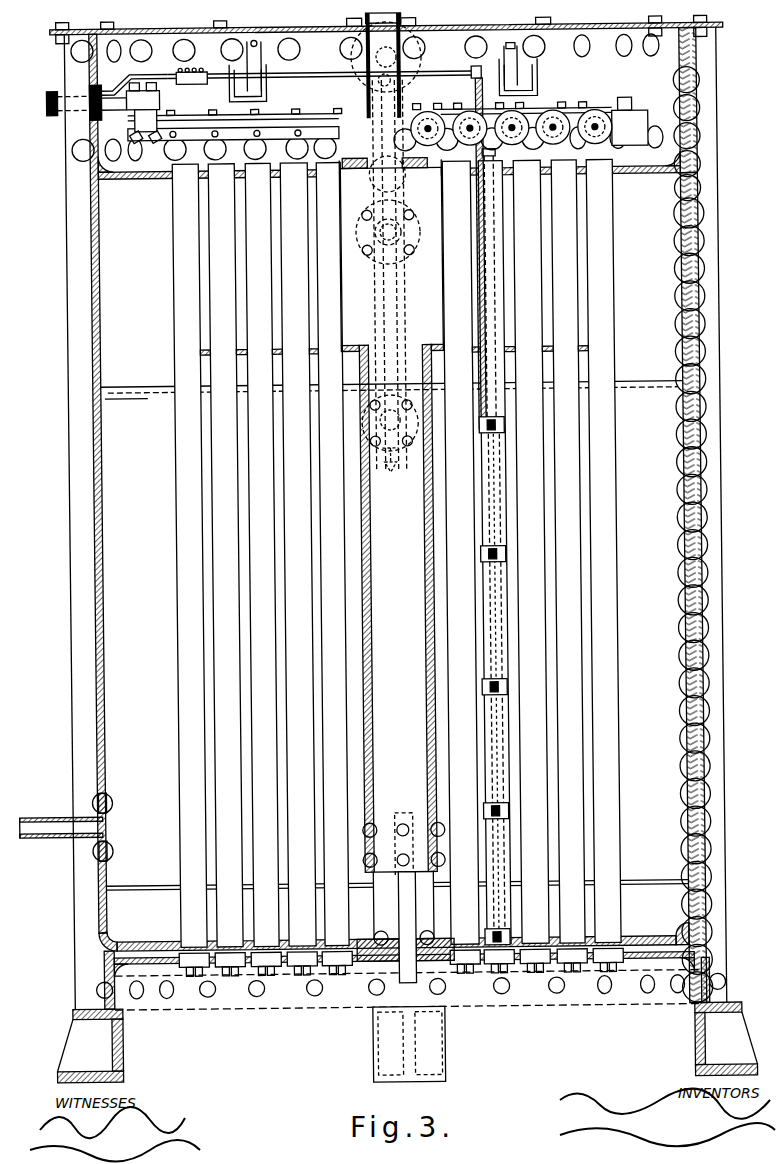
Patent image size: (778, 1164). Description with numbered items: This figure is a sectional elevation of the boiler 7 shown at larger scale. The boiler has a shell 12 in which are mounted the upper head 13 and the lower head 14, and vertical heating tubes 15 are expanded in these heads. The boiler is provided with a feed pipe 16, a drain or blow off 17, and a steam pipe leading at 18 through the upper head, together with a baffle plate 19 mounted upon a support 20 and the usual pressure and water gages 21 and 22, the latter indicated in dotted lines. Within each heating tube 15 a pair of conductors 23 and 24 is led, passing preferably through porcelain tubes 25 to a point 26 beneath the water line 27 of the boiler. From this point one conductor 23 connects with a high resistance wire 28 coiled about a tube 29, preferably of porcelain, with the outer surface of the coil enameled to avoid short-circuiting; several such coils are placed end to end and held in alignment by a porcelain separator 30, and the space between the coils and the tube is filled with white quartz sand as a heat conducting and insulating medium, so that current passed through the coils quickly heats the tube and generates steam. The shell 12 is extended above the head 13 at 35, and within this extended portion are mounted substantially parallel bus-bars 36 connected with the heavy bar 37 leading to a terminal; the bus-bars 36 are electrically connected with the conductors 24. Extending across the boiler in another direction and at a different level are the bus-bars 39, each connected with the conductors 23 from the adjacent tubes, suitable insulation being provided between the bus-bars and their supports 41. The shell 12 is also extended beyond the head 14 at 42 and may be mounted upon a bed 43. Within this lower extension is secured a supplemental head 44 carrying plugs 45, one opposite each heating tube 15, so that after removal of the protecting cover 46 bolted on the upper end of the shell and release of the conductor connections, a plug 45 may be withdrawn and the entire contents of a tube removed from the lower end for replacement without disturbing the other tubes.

The boiler 7 is at (389, 490).
The shell 12 is at (99, 521).
The upper head 13 is at (158, 177).
The lower head 14 is at (158, 939).
The heating tubes 15 is at (213, 618).
The feed pipe 16 is at (44, 806).
The drain or blow off 17 is at (398, 983).
The steam pipe 18 is at (380, 176).
The baffle plate 19 is at (436, 345).
The support 20 is at (401, 641).
The pressure gage 21 is at (402, 76).
The water gage 22 is at (400, 320).
The conductor 23 is at (478, 70).
The conductor 24 is at (500, 150).
The porcelain tubes 25 is at (500, 313).
The point 26 is at (507, 431).
The water line 27 is at (132, 384).
The high resistance wire 28 is at (486, 445).
The tube 29 is at (504, 494).
The porcelain separator 30 is at (481, 430).
The extended portion of shell 35 is at (686, 94).
The bus-bars 36 is at (525, 120).
The heavy bar 37 is at (320, 126).
The bus-bars 39 is at (338, 68).
The supports 41 is at (260, 62).
The lower extended portion of shell 42 is at (100, 951).
The bed 43 is at (118, 1050).
The supplemental head 44 is at (172, 964).
The plugs 45 is at (280, 965).
The protecting cover 46 is at (192, 26).